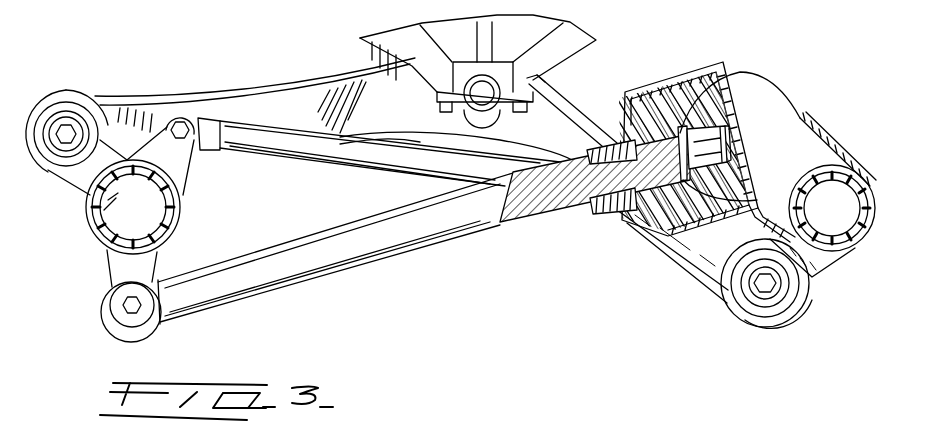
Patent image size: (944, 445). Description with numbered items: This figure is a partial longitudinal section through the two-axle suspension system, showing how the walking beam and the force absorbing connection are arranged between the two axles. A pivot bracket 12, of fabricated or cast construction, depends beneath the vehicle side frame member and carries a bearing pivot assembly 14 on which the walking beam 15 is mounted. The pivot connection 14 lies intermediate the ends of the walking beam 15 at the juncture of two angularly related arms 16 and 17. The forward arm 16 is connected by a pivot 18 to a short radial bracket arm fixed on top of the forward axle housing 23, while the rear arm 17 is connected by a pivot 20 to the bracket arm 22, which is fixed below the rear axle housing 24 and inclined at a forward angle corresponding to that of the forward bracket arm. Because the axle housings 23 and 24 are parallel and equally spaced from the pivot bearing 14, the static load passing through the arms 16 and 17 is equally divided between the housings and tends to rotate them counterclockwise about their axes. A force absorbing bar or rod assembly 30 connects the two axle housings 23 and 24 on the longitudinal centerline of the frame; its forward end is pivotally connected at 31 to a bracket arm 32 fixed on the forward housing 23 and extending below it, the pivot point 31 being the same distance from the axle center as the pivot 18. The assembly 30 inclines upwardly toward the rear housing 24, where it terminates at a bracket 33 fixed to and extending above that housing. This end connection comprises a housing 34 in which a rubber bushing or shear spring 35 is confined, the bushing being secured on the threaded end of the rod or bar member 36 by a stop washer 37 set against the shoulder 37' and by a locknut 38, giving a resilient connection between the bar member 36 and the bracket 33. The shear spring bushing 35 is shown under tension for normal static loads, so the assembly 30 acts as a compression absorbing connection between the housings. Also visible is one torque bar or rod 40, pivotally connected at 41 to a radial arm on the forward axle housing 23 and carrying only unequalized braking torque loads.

The pivot bracket 12 is at (577, 43).
The bearing pivot assembly 14 is at (498, 90).
The walking beam 15 is at (297, 76).
The walking beam arm 16 is at (257, 95).
The walking beam arm 17 is at (600, 143).
The pivot 18 is at (66, 130).
The pivot 20 is at (770, 292).
The bracket arm 22 is at (810, 275).
The axle housing 23 is at (100, 222).
The axle housing 24 is at (865, 193).
The force absorbing bar or rod assembly 30 is at (437, 255).
The pivot point 31 is at (137, 303).
The bracket arm 32 is at (113, 263).
The bracket 33 is at (798, 120).
The housing 34 is at (650, 88).
The bushing or shear spring 35 is at (683, 90).
The rod or bar member 36 is at (530, 220).
The stop washer 37 is at (613, 243).
The shoulder 37' is at (606, 213).
The locknut 38 is at (705, 150).
The torque bar or rod 40 is at (318, 148).
The pivot 41 is at (180, 122).